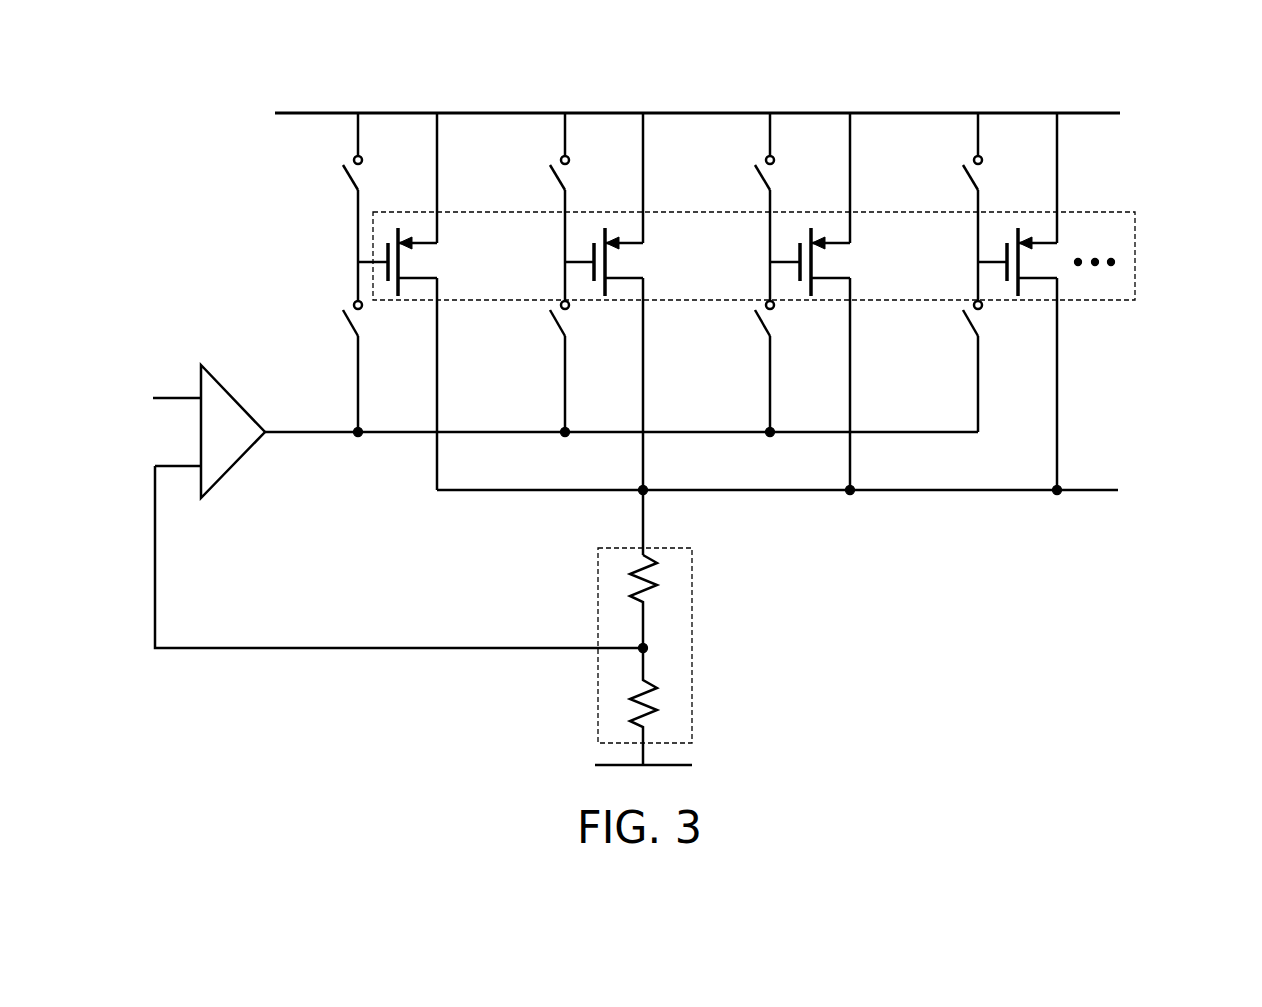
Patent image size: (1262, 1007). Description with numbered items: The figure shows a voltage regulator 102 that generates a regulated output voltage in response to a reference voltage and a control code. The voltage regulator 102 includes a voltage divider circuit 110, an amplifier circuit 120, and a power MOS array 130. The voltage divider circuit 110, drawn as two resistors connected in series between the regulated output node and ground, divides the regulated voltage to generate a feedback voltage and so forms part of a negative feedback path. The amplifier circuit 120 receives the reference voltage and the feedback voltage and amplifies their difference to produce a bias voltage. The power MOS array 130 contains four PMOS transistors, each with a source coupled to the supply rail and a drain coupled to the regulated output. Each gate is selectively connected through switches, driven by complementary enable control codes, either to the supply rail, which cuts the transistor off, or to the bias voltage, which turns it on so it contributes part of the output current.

The voltage regulator 102 is at (1249, 74).
The voltage divider circuit 110 is at (693, 648).
The amplifier circuit 120 is at (236, 468).
The power MOS array 130 is at (1136, 262).